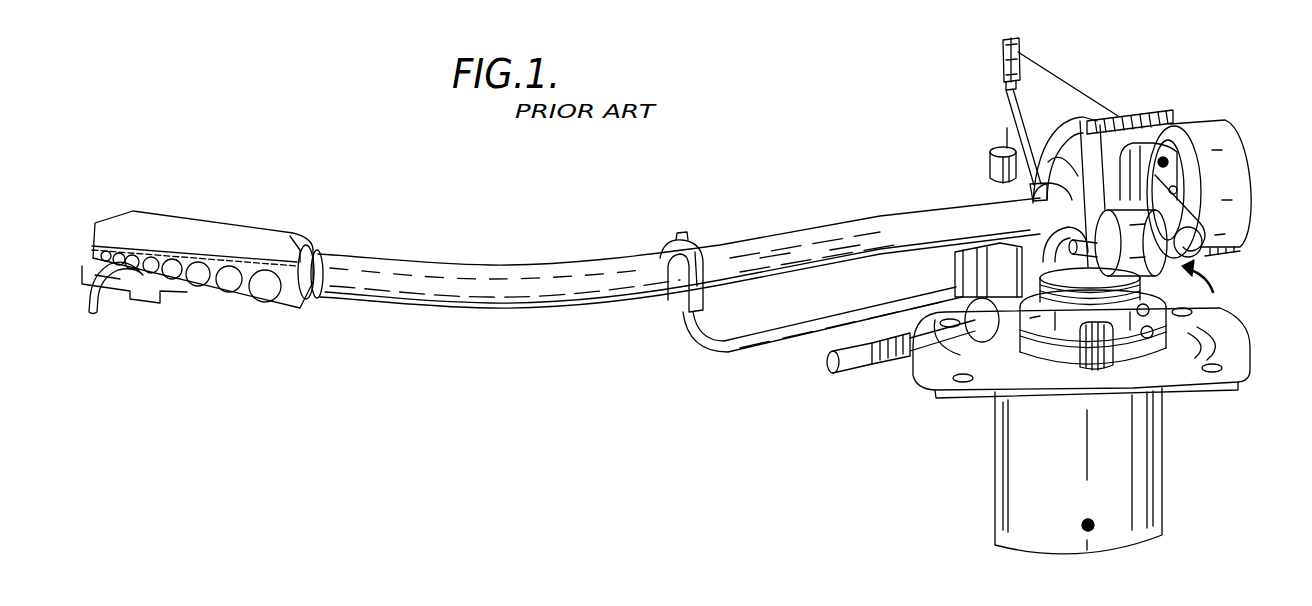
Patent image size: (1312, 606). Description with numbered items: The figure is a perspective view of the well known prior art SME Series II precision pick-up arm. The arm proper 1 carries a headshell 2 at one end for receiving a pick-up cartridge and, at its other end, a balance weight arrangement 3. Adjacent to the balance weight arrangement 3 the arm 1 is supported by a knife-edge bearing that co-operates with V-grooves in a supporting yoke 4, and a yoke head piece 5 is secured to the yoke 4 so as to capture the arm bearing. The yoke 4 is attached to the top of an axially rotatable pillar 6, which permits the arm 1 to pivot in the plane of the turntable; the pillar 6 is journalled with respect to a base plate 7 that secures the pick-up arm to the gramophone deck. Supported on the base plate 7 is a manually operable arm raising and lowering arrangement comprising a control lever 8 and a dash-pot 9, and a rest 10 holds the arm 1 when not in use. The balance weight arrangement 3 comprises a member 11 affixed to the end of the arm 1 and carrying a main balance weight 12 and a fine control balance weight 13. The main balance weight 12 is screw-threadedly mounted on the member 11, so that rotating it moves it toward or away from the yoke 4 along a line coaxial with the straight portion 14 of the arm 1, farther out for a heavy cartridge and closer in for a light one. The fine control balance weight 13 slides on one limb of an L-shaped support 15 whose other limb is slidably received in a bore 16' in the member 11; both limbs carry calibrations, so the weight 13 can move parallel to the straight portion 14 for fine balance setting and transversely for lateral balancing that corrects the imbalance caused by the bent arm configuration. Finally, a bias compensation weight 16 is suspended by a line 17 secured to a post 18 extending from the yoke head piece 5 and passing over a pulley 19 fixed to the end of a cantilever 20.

The arm proper 1 is at (444, 292).
The headshell 2 is at (192, 230).
The balance weight arrangement 3 is at (1196, 275).
The supporting yoke 4 is at (1023, 193).
The yoke head piece 5 is at (1070, 133).
The pillar 6 is at (905, 281).
The base plate 7 is at (1207, 378).
The control lever 8 is at (838, 371).
The dash-pot 9 is at (967, 263).
The rest 10 is at (690, 345).
The member 11 is at (1113, 125).
The main balance weight 12 is at (1223, 137).
The fine control balance weight 13 is at (1147, 374).
The straight portion 14 is at (856, 200).
The L-shaped support 15 is at (1210, 273).
The bias compensation weight 16 is at (968, 165).
The bore 16' is at (1189, 159).
The line 17 is at (1100, 95).
The post 18 is at (1150, 110).
The pulley 19 is at (1003, 60).
The cantilever 20 is at (1007, 130).